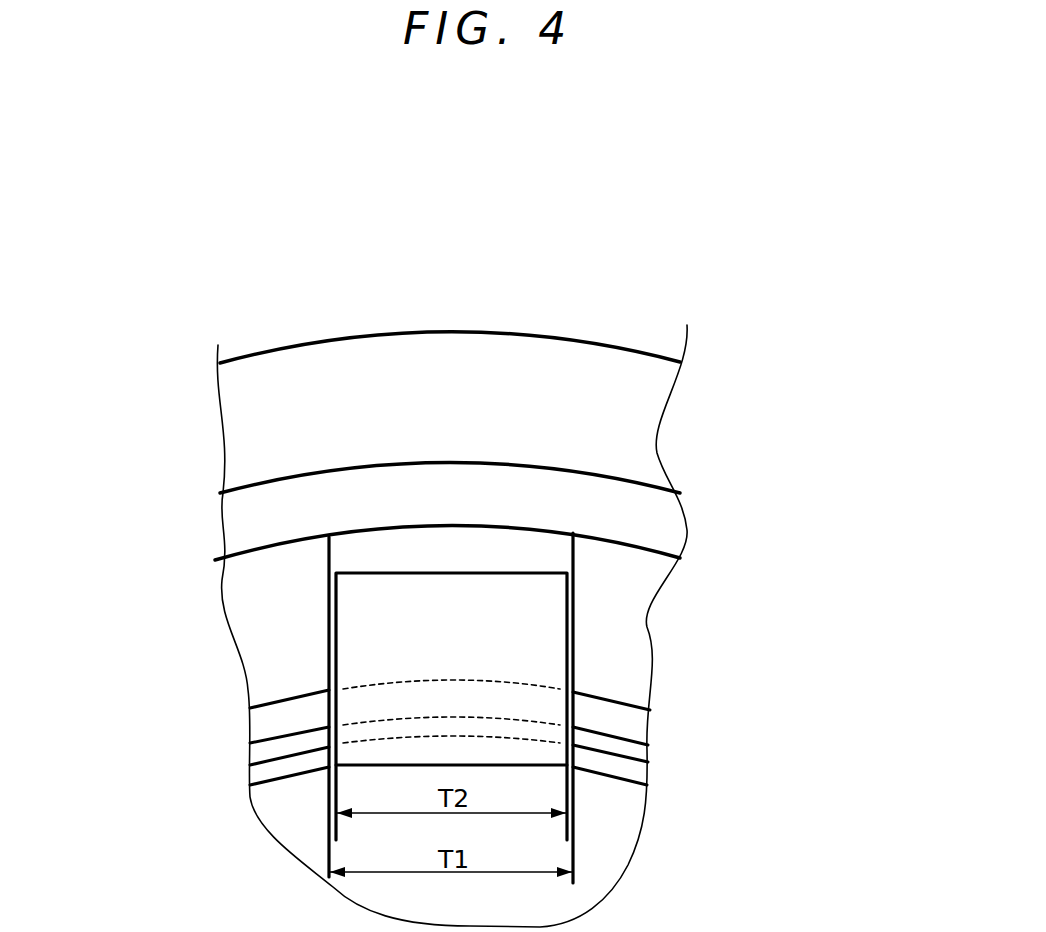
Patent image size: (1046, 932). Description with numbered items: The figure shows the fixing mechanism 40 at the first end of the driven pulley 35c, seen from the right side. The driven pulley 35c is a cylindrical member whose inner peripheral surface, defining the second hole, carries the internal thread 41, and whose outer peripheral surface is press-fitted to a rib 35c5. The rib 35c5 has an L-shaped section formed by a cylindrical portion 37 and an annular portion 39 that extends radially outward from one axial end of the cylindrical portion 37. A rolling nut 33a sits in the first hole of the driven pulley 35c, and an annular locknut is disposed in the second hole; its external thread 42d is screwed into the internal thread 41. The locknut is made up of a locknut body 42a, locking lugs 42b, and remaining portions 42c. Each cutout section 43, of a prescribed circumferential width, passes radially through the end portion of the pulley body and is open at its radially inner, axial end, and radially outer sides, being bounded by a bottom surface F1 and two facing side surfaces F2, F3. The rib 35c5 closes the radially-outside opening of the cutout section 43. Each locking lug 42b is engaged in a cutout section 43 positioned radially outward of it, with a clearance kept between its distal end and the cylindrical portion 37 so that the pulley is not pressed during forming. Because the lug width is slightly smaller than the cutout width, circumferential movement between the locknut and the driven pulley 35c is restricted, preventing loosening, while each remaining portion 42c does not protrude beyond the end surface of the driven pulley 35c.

The rolling nut 33a is at (298, 652).
The driven pulley 35c is at (642, 593).
The rib 35c5 is at (520, 392).
The cylindrical portion 37 is at (353, 505).
The annular portion 39 is at (470, 400).
The fixing mechanism 40 is at (238, 612).
The internal thread 41 is at (542, 688).
The locknut body 42a is at (617, 810).
The locking lug 42b is at (470, 603).
The remaining portion 42c is at (617, 768).
The external thread 42d is at (610, 710).
The cutout section 43 is at (522, 550).
The bottom surface F1 is at (387, 550).
The side surface F2 is at (577, 558).
The side surface F3 is at (332, 552).